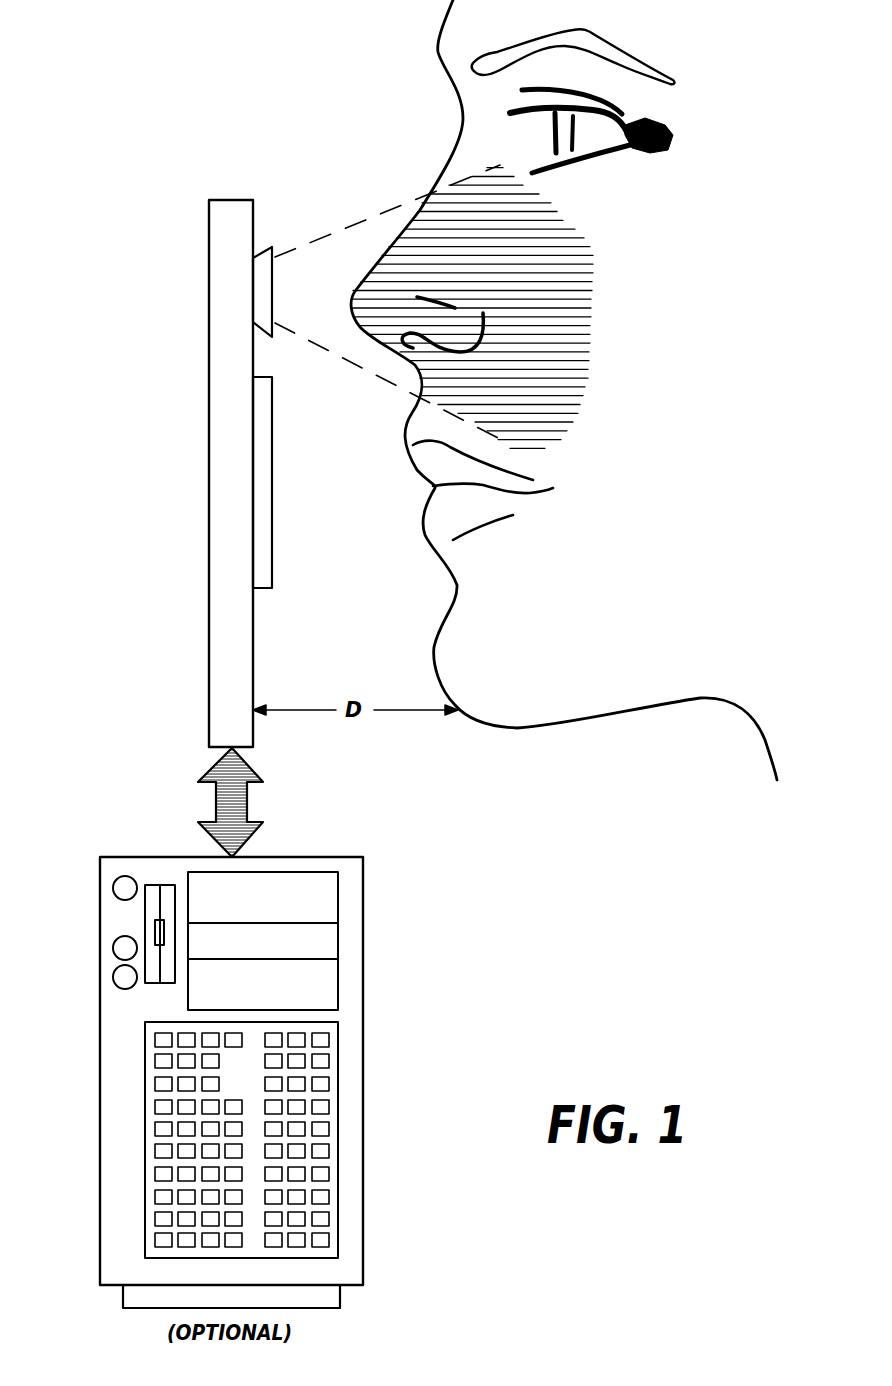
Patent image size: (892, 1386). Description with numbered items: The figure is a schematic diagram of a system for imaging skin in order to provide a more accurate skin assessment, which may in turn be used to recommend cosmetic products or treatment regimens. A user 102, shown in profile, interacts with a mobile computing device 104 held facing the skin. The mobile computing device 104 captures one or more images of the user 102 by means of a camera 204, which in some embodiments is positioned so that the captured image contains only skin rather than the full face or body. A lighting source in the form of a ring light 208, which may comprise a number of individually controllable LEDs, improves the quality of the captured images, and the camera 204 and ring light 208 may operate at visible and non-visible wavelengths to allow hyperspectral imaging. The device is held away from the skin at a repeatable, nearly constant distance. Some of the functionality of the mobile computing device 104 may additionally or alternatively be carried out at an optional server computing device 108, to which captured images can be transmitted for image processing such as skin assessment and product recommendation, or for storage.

The user 102 is at (626, 714).
The mobile computing device 104 is at (209, 440).
The server computing device 108 is at (363, 1085).
The camera 204 is at (260, 255).
The ring light 208 is at (272, 545).